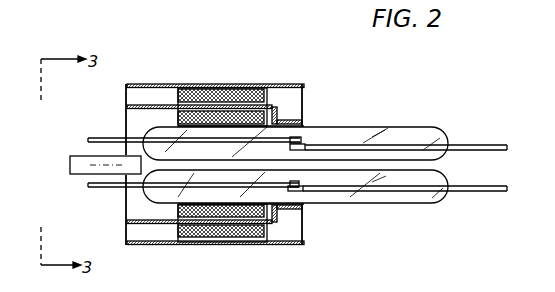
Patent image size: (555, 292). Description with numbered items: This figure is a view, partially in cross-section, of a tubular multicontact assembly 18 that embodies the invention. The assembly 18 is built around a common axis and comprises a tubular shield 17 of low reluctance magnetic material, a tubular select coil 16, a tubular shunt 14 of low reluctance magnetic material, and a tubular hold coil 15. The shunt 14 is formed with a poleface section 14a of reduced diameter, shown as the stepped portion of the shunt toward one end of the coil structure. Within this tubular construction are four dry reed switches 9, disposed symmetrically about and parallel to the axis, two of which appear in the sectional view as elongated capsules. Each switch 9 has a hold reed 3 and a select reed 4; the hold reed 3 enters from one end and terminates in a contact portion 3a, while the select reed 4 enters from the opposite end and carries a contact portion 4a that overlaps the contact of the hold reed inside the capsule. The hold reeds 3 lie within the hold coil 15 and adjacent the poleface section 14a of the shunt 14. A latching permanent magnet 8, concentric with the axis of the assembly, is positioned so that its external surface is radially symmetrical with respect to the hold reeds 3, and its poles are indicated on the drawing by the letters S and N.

The hold reed 3 is at (89, 137).
The reed contact of lead 3a is at (304, 141).
The select reed 4 is at (477, 146).
The contact portion of lead 4a is at (300, 150).
The latching permanent magnet 8 is at (70, 165).
The dry reed switch 9 is at (421, 127).
The tubular shunt 14 is at (127, 107).
The poleface section 14a is at (296, 121).
The tubular hold coil 15 is at (276, 112).
The tubular select coil 16 is at (246, 92).
The tubular shield 17 is at (214, 88).
The multicontact assembly 18 is at (158, 81).